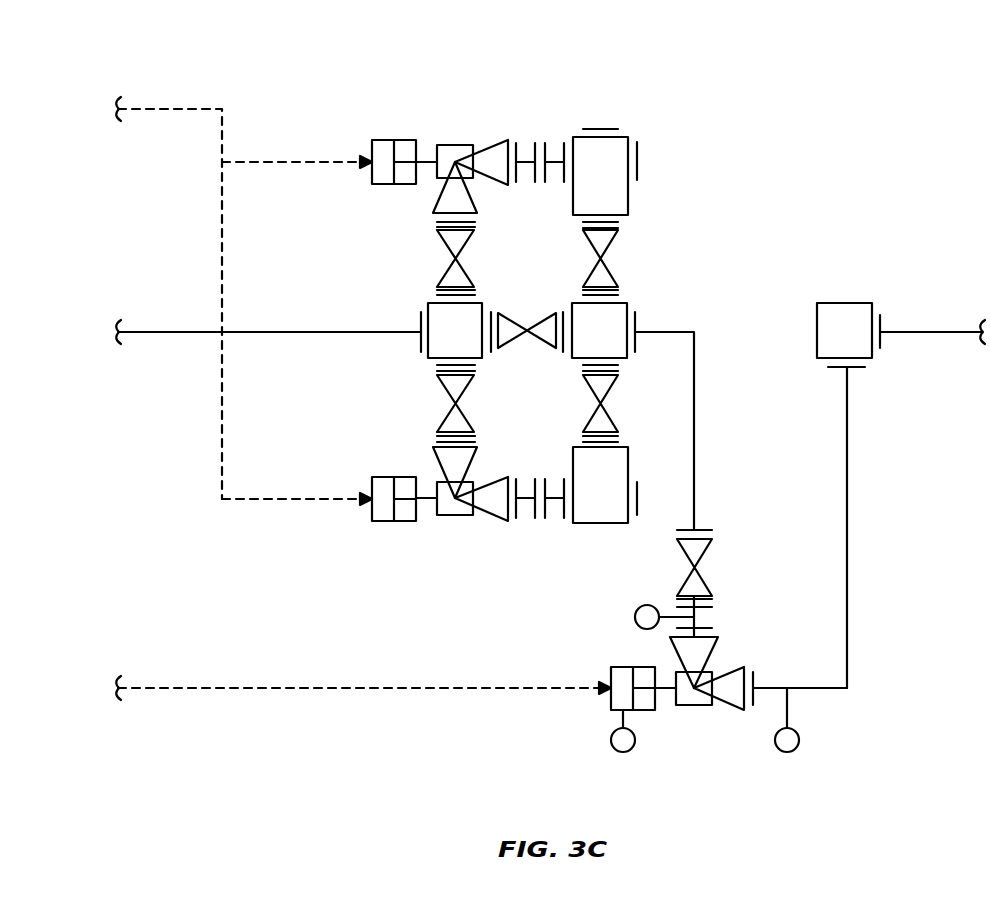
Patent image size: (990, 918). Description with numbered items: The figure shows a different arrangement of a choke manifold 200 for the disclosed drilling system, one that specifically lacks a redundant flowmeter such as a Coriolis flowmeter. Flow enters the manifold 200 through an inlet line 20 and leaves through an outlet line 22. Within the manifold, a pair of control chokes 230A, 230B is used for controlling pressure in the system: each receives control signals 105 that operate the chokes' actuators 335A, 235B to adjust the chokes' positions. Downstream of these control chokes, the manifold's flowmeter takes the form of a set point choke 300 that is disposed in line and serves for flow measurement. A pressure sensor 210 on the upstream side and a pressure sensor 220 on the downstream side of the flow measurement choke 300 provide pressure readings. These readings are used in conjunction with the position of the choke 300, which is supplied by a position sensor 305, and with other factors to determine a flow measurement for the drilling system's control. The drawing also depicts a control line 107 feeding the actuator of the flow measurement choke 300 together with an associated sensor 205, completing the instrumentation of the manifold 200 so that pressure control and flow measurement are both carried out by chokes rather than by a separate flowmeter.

The choke manifold 200 is at (779, 58).
The control signals 105 is at (170, 108).
The actuator 335A is at (385, 140).
The control choke 230A is at (453, 145).
The inlet line 20 is at (194, 332).
The outlet line 22 is at (915, 332).
The actuator 235B is at (385, 521).
The control choke 230B is at (453, 515).
The pressure sensor 210 is at (636, 612).
The position sensor 305 is at (622, 667).
The control signal line 107 is at (330, 688).
The set point choke 300 is at (693, 705).
The sensor 205 is at (612, 747).
The pressure sensor 220 is at (799, 745).